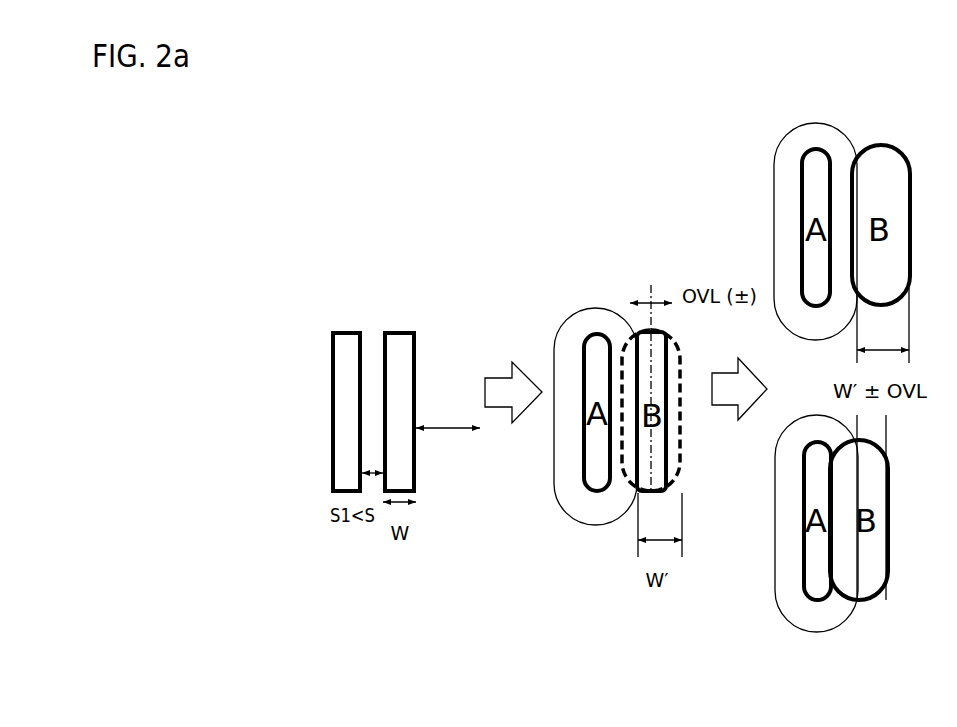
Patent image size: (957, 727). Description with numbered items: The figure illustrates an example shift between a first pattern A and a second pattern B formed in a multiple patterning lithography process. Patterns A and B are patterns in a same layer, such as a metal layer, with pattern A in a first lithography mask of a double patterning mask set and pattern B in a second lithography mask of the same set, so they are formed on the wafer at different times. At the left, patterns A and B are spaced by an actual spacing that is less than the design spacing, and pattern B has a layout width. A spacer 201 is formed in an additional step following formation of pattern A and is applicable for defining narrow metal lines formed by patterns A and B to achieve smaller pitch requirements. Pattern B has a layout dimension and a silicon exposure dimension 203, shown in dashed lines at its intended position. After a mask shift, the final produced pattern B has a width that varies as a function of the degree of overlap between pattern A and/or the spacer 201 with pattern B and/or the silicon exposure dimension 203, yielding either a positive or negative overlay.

The spacer 201 is at (572, 510).
The silicon exposure dimension 203 is at (685, 355).
The first pattern A is at (346, 412).
The second pattern B is at (399, 412).